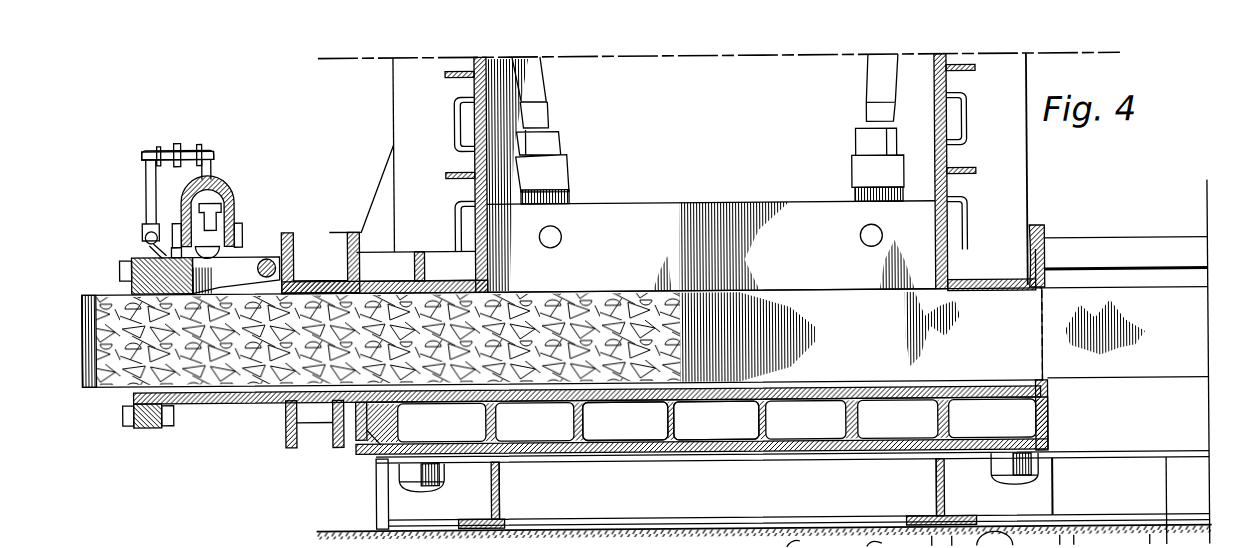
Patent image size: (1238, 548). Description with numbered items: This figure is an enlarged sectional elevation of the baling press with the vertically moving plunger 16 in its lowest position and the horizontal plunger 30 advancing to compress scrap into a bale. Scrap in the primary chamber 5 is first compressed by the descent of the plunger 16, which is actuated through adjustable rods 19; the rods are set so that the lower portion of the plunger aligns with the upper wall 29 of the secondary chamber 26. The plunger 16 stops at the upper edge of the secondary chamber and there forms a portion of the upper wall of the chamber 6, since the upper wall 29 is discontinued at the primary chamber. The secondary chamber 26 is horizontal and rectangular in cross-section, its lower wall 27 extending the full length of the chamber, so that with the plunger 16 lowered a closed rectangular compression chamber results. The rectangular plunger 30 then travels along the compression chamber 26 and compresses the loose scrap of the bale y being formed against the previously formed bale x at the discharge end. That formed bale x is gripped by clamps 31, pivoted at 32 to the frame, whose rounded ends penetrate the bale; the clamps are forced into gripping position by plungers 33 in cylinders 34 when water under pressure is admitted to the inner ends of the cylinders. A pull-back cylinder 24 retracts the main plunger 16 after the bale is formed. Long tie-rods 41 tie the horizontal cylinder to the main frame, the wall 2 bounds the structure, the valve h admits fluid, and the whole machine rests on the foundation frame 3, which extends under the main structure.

The housing wall 2 is at (395, 86).
The foundation frame 3 is at (748, 498).
The primary chamber 5 is at (712, 174).
The chamber 6 is at (456, 123).
The plunger 16 is at (646, 256).
The rods 19 is at (546, 67).
The lower hydraulic cylinder 24 is at (1006, 538).
The secondary chamber 26 is at (618, 396).
The lower wall 27 is at (738, 418).
The upper wall 29 is at (695, 271).
The plunger 30 is at (900, 336).
The clamps 31 is at (241, 267).
The pivot 32 is at (270, 255).
The plungers 33 is at (232, 212).
The cylinders 34 is at (212, 180).
The tie-rods 41 is at (1118, 256).
The valve h is at (150, 208).
The bale x is at (218, 384).
The bale y is at (514, 396).